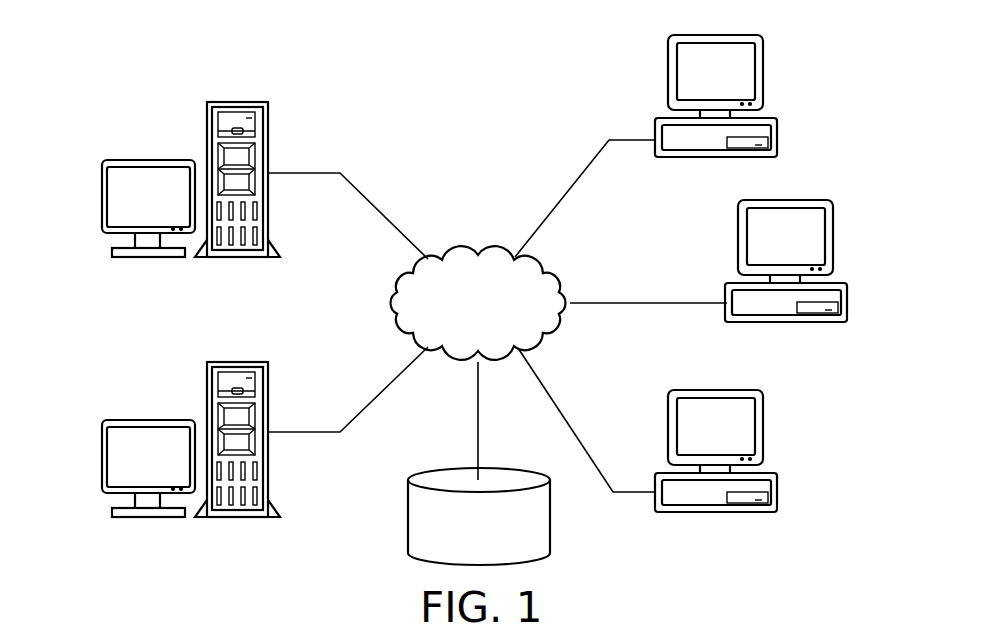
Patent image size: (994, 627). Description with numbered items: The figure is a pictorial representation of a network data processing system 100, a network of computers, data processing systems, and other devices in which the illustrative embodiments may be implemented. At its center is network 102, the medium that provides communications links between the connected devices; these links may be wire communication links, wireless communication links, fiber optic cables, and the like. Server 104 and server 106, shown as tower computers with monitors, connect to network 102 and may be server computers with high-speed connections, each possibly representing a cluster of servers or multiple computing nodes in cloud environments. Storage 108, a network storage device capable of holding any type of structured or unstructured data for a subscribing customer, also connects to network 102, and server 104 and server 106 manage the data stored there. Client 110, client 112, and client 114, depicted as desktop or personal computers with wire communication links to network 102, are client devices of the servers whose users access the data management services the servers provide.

The network data processing system 100 is at (346, 84).
The network 102 is at (450, 250).
The server 104 is at (102, 197).
The server 106 is at (102, 480).
The storage 108 is at (408, 515).
The client 110 is at (777, 130).
The client 112 is at (847, 310).
The client 114 is at (777, 500).